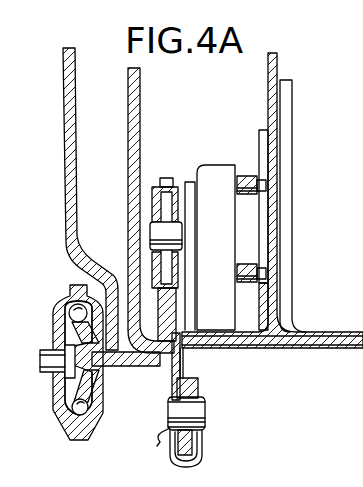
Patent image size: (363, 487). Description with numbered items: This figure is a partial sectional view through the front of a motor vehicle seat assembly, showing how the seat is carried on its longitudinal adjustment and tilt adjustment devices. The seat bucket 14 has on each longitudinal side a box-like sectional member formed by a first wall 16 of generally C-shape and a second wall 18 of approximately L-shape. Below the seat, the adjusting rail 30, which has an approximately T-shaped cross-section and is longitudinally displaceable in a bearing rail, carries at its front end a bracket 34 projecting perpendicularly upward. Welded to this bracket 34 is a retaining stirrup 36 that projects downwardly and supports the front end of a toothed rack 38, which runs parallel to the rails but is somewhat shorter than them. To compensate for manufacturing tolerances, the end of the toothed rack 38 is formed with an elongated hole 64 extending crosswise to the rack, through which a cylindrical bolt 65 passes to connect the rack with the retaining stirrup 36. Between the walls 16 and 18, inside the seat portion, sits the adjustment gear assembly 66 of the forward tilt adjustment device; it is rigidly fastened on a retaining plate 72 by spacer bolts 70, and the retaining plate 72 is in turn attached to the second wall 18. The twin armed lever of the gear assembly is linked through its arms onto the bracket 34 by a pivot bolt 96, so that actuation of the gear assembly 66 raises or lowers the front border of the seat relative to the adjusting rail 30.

The seat bucket 14 is at (66, 238).
The first wall 16 is at (141, 95).
The second wall 18 is at (278, 195).
The adjusting rail 30 is at (113, 364).
The bracket 34 is at (176, 176).
The retaining stirrup 36 is at (203, 393).
The toothed rack 38 is at (190, 378).
The elongated hole 64 is at (204, 410).
The cylindrical bolt 65 is at (158, 433).
The adjustment gear assembly 66 is at (215, 165).
The spacer bolts 70 is at (247, 176).
The retaining plate 72 is at (292, 116).
The pivot bolt 96 is at (155, 236).